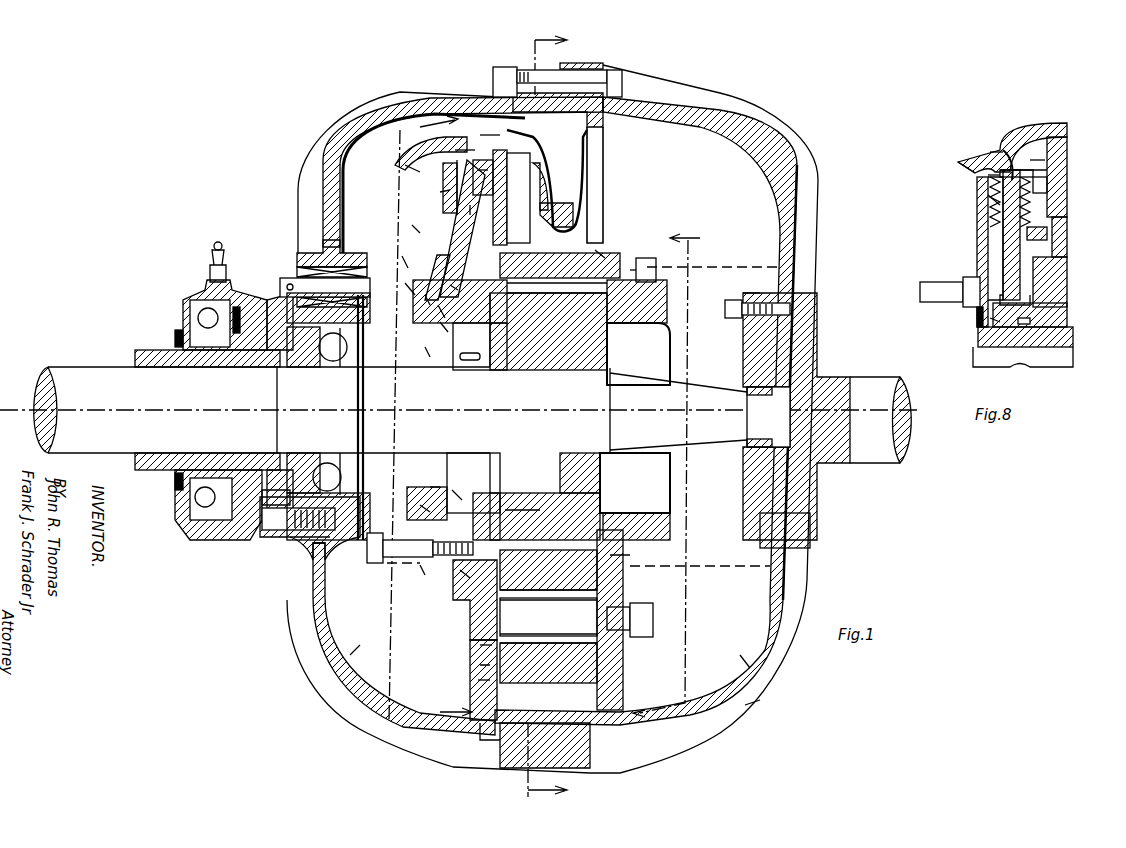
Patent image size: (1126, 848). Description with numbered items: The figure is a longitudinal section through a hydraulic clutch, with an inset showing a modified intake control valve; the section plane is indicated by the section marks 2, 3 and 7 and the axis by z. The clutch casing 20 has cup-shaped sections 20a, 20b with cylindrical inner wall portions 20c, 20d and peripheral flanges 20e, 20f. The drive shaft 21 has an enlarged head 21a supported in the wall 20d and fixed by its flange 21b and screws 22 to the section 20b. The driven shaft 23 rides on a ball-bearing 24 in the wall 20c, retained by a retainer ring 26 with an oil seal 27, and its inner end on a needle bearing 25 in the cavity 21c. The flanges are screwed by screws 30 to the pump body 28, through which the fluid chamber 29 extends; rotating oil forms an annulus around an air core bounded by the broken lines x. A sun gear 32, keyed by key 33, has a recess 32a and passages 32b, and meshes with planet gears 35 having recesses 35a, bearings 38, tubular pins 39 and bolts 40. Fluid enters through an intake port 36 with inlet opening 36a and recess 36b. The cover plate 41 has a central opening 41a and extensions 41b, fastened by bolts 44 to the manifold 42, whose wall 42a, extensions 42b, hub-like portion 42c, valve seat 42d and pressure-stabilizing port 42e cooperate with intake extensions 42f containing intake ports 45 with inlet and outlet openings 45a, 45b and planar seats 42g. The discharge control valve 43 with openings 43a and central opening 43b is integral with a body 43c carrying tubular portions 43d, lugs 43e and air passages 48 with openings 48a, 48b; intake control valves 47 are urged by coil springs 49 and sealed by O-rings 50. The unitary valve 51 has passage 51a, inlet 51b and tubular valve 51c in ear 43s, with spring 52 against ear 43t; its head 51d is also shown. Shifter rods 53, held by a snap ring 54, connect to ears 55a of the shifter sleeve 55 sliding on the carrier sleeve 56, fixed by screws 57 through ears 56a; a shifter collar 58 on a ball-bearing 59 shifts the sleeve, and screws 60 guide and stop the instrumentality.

In FIG. 1, the clutch casing 20 is at (300, 640).
In FIG. 1, the casing section 20a is at (375, 736).
In FIG. 1, the casing section 20b is at (760, 700).
In FIG. 1, the cylindrical inner wall portion 20c is at (310, 572).
In FIG. 1, the cylindrical inner wall portion 20d is at (795, 525).
In FIG. 1, the outer peripheral flange 20e is at (487, 738).
In FIG. 1, the outer peripheral flange 20f is at (590, 760).
In FIG. 1, the drive shaft 21 is at (870, 392).
In FIG. 1, the enlarged head 21a is at (800, 345).
In FIG. 1, the flange 21b is at (750, 298).
In FIG. 1, the cavity 21c is at (770, 450).
In FIG. 1, the screws 22 is at (730, 309).
In FIG. 1, the driven shaft 23 is at (108, 378).
In FIG. 1, the ball-bearing 24 is at (345, 347).
In FIG. 1, the needle type bearing 25 is at (760, 388).
In FIG. 1, the retainer ring 26 is at (362, 320).
In FIG. 1, the oil seal 27 is at (282, 497).
In FIG. 1, the pump body 28 is at (612, 140).
In FIG. 1, the fluid chamber 29 is at (355, 652).
In FIG. 1, the screws 30 is at (500, 70).
In FIG. 1, the sun gear 32 is at (600, 345).
In FIG. 1, the recess 32a is at (520, 510).
In FIG. 1, the passages 32b is at (602, 482).
In FIG. 1, the key 33 is at (612, 365).
In FIG. 1, the planet gear 35 is at (600, 672).
In FIG. 1, the recess 35a is at (625, 563).
In FIG. 1, the fluid intake port 36 is at (600, 200).
In FIG. 1, the inlet opening 36a is at (606, 160).
In FIG. 1, the recess 36b is at (600, 250).
In FIG. 1, the antifriction bearing 38 is at (570, 665).
In FIG. 1, the tubular pin 39 is at (575, 628).
In FIG. 1, the bolt 40 is at (655, 620).
In FIG. 1, the pump cover plate 41 is at (665, 520).
In FIG. 1, the central opening 41a is at (660, 330).
In FIG. 1, the radial extensions 41b is at (612, 690).
In FIG. 1, the pump manifold 42 is at (480, 590).
In FIG. 8, the pump manifold 42 is at (1068, 206).
In FIG. 1, the wall 42a is at (478, 685).
In FIG. 1, the radial extensions 42b is at (480, 650).
In FIG. 1, the hub-like portion 42c is at (466, 276).
In FIG. 8, the hub-like portion 42c is at (1060, 285).
In FIG. 1, the central opening 42d is at (440, 312).
In FIG. 1, the pressure-stabilizing port 42e is at (440, 327).
In FIG. 8, the pressure-stabilizing port 42e is at (1055, 312).
In FIG. 1, the fluid intake extensions 42f is at (466, 152).
In FIG. 8, the fluid intake extensions 42f is at (1048, 124).
In FIG. 1, the planar valve seat 42g is at (412, 175).
In FIG. 8, the planar valve seat 42g is at (960, 170).
In FIG. 1, the fluid discharge control valve 43 is at (430, 500).
In FIG. 8, the fluid discharge control valve 43 is at (1073, 337).
In FIG. 1, the discharge openings 43a is at (472, 356).
In FIG. 1, the central opening 43b is at (430, 490).
In FIG. 1, the body 43c is at (412, 230).
In FIG. 8, the body 43c is at (977, 236).
In FIG. 1, the cylindrical tubular portions 43d is at (470, 210).
In FIG. 1, the lugs 43e is at (402, 262).
In FIG. 8, the perforated ear 43s is at (1047, 185).
In FIG. 8, the supporting ear 43t is at (1047, 234).
In FIG. 1, the bolts 44 is at (648, 258).
In FIG. 1, the fluid intake port 45 is at (470, 120).
In FIG. 8, the fluid intake port 45 is at (1020, 140).
In FIG. 1, the inlet opening 45a is at (448, 143).
In FIG. 8, the inlet opening 45a is at (995, 152).
In FIG. 1, the outlet opening 45b is at (490, 135).
In FIG. 1, the air and oil intake control valve 47 is at (442, 188).
In FIG. 1, the air intake passage 48 is at (450, 230).
In FIG. 1, the inlet opening 48a is at (435, 268).
In FIG. 1, the outlet opening 48b is at (483, 170).
In FIG. 1, the coil spring 49 is at (440, 192).
In FIG. 1, the O-ring seal 50 is at (495, 186).
In FIG. 8, the O-ring seal 50 is at (990, 187).
In FIG. 8, the combined unitary air and oil intake control valve 51 is at (1003, 253).
In FIG. 8, the tubular air intake passage 51a is at (1010, 266).
In FIG. 8, the air inlet opening 51b is at (995, 325).
In FIG. 8, the tubular valve 51c is at (990, 200).
In FIG. 8, the pin head 51d is at (1035, 167).
In FIG. 1, the coil spring 52 is at (425, 352).
In FIG. 8, the coil spring 52 is at (990, 213).
In FIG. 1, the shifter rods 53 is at (410, 290).
In FIG. 8, the shifter rods 53 is at (925, 288).
In FIG. 1, the snap ring 54 is at (425, 300).
In FIG. 8, the snap ring 54 is at (978, 312).
In FIG. 1, the shifter sleeve 55 is at (175, 340).
In FIG. 1, the ears 55a is at (283, 278).
In FIG. 1, the carrier sleeve 56 is at (155, 352).
In FIG. 1, the ears 56a is at (300, 545).
In FIG. 1, the screws 57 is at (290, 532).
In FIG. 1, the shifter collar 58 is at (200, 292).
In FIG. 1, the ball-bearing 59 is at (200, 315).
In FIG. 1, the screws 60 is at (370, 550).
In FIG. 1, the section line 2- 2 is at (528, 417).
In FIG. 1, the section line 3- 3 is at (673, 474).
In FIG. 1, the section line 7- 7 is at (425, 418).
In FIG. 1, the air core boundary x is at (559, 416).
In FIG. 1, the axis z is at (632, 415).